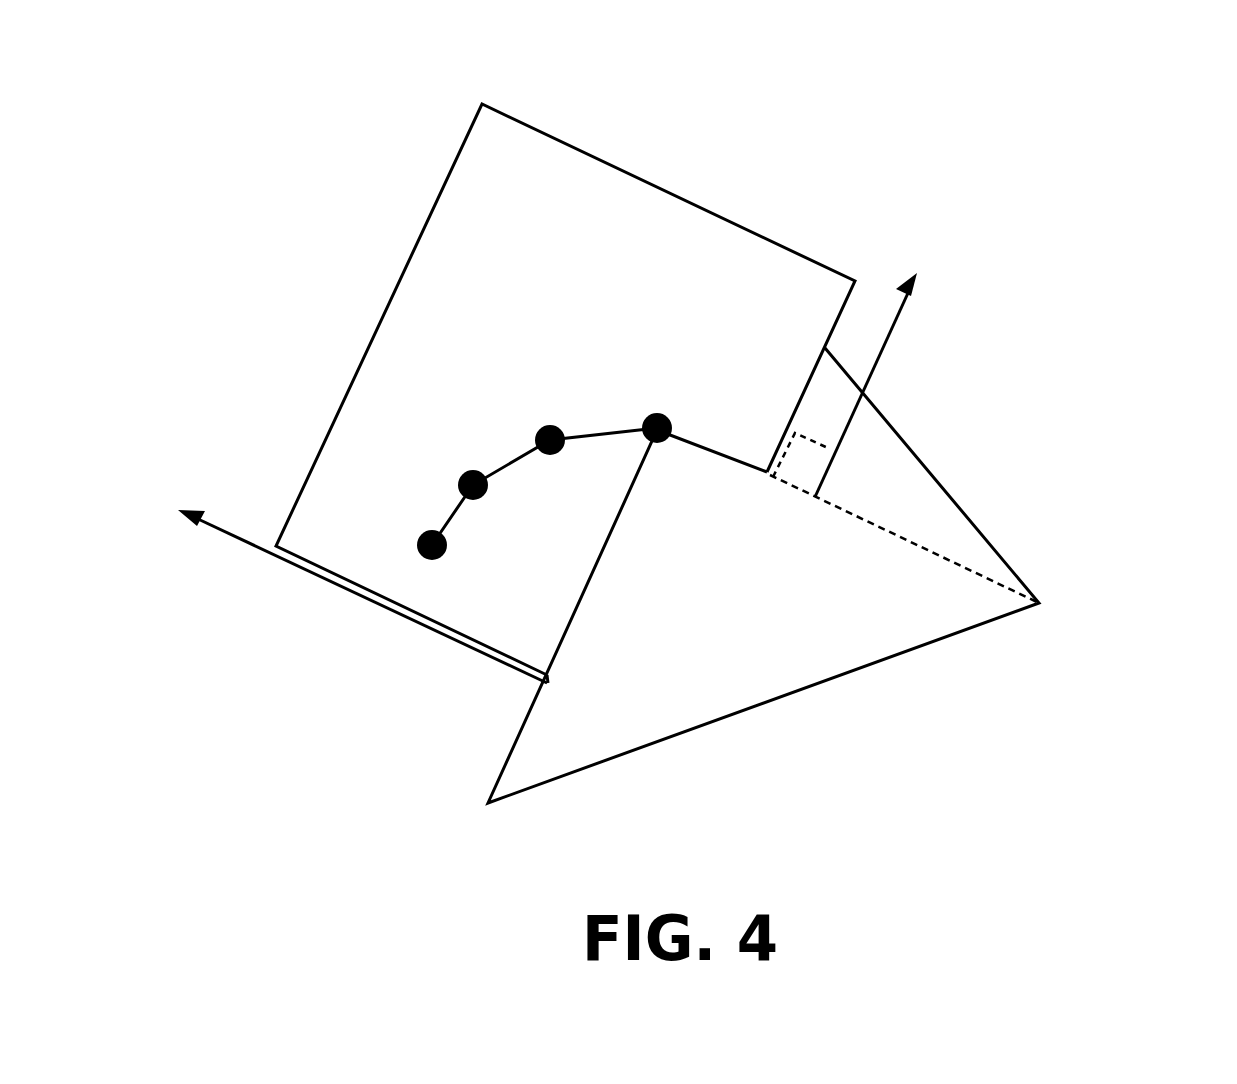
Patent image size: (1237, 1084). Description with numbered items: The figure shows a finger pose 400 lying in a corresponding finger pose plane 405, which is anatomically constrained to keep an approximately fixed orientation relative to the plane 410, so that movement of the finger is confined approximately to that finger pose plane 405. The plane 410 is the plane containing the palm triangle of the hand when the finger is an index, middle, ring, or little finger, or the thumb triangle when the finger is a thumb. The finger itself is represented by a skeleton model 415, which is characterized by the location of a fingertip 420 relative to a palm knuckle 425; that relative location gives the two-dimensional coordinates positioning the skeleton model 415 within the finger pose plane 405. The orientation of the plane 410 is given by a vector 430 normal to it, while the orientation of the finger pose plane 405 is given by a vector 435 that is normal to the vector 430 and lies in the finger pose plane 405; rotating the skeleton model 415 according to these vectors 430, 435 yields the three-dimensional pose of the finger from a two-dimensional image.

The finger pose 400 is at (1128, 95).
The finger pose plane 405 is at (433, 203).
The plane 410 is at (803, 690).
The skeleton model 415 is at (544, 455).
The fingertip 420 is at (415, 547).
The palm knuckle 425 is at (672, 422).
The vector 430 is at (892, 332).
The vector 435 is at (418, 625).